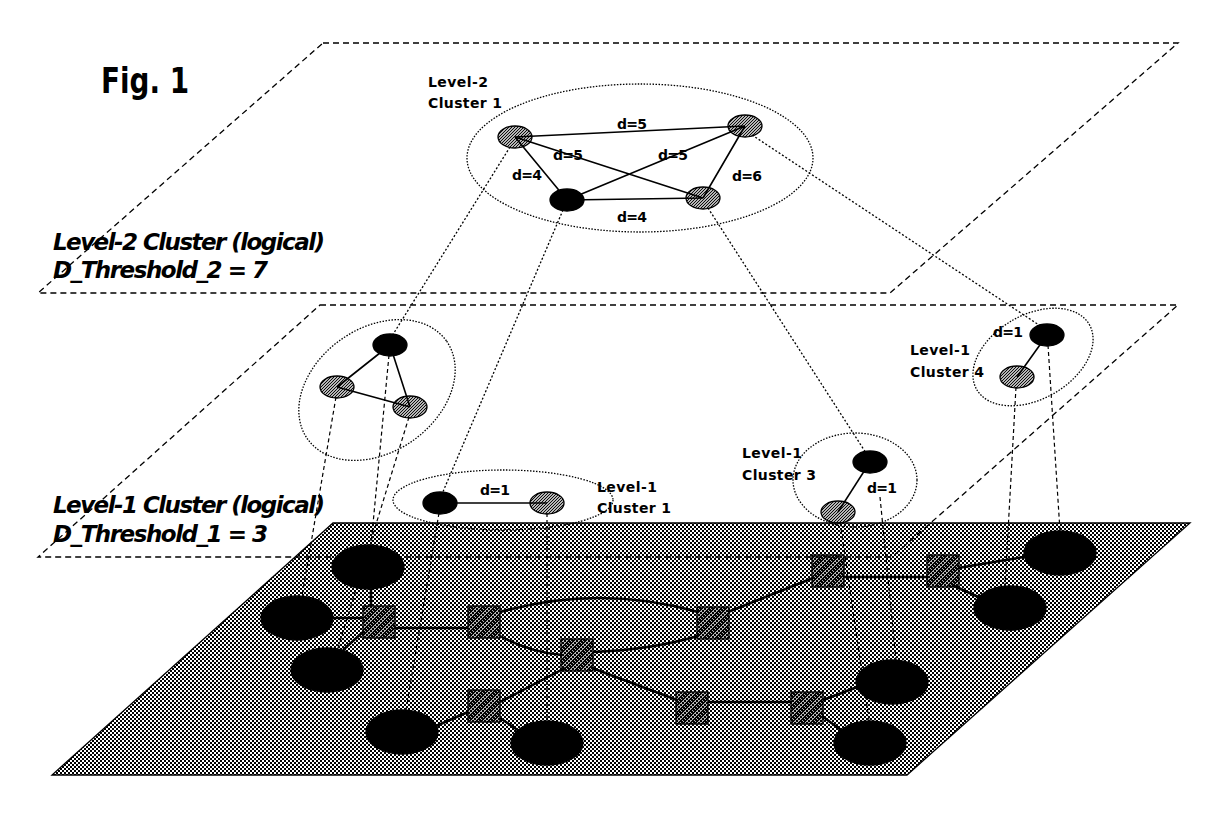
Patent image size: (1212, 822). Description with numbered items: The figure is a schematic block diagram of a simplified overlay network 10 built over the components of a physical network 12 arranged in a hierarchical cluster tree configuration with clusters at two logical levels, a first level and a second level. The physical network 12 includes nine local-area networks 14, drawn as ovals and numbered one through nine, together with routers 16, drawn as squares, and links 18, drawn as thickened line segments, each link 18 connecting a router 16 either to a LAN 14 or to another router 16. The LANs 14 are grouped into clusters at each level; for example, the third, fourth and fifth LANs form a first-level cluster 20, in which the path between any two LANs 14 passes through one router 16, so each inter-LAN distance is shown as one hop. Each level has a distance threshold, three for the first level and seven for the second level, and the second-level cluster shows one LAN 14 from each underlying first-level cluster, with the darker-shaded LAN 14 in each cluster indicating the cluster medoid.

The overlay network 10 is at (164, 182).
The physical network 12 is at (309, 767).
The local-area network 14 is at (350, 703).
The router 16 is at (396, 604).
The link 18 is at (528, 680).
The Level-1 cluster 20 is at (357, 338).